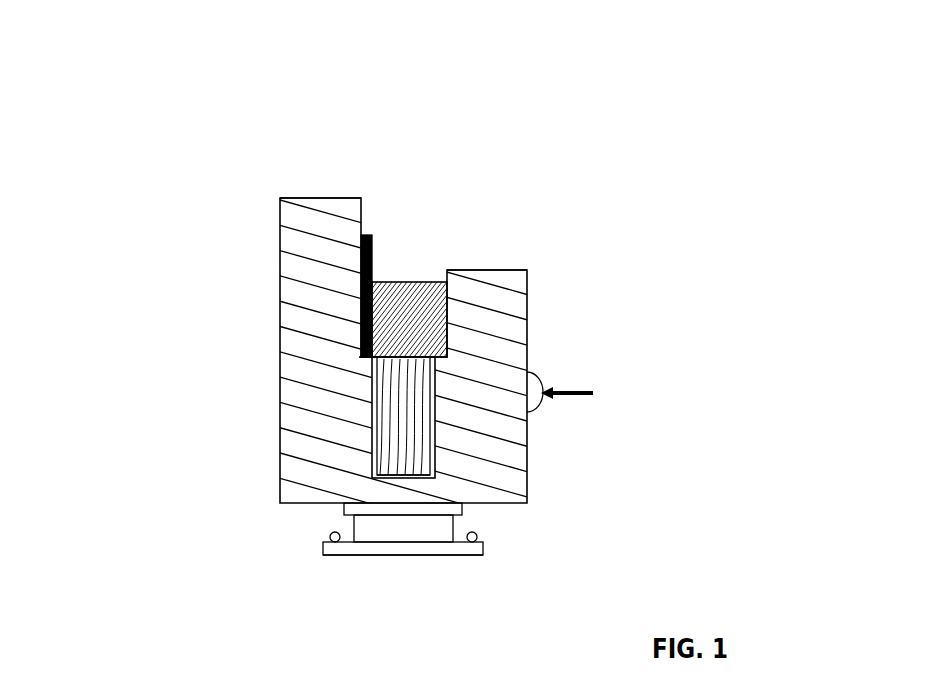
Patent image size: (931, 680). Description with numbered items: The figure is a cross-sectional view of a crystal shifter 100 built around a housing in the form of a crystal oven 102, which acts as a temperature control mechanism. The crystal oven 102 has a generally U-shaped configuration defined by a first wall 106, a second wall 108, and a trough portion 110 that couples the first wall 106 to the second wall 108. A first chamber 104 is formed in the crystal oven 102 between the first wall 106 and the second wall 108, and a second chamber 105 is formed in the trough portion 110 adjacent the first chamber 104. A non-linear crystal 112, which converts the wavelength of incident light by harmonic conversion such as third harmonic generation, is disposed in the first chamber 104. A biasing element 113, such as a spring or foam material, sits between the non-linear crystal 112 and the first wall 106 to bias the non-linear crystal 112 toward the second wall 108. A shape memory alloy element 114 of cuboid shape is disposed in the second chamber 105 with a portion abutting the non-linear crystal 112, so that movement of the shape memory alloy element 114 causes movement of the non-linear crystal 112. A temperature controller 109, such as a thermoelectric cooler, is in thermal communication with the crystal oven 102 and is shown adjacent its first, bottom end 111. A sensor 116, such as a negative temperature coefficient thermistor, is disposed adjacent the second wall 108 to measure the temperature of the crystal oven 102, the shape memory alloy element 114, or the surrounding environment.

The crystal shifter 100 is at (188, 160).
The crystal oven 102 is at (511, 260).
The first chamber 104 is at (430, 274).
The second chamber 105 is at (403, 474).
The first wall 106 is at (317, 202).
The second wall 108 is at (522, 303).
The temperature controller 109 is at (333, 548).
The trough portion 110 is at (403, 493).
The first (bottom) end 111 is at (437, 503).
The non-linear crystal 112 is at (362, 353).
The biasing element 113 is at (370, 233).
The shape memory alloy (SMA) element 114 is at (368, 426).
The sensor 116 is at (530, 372).